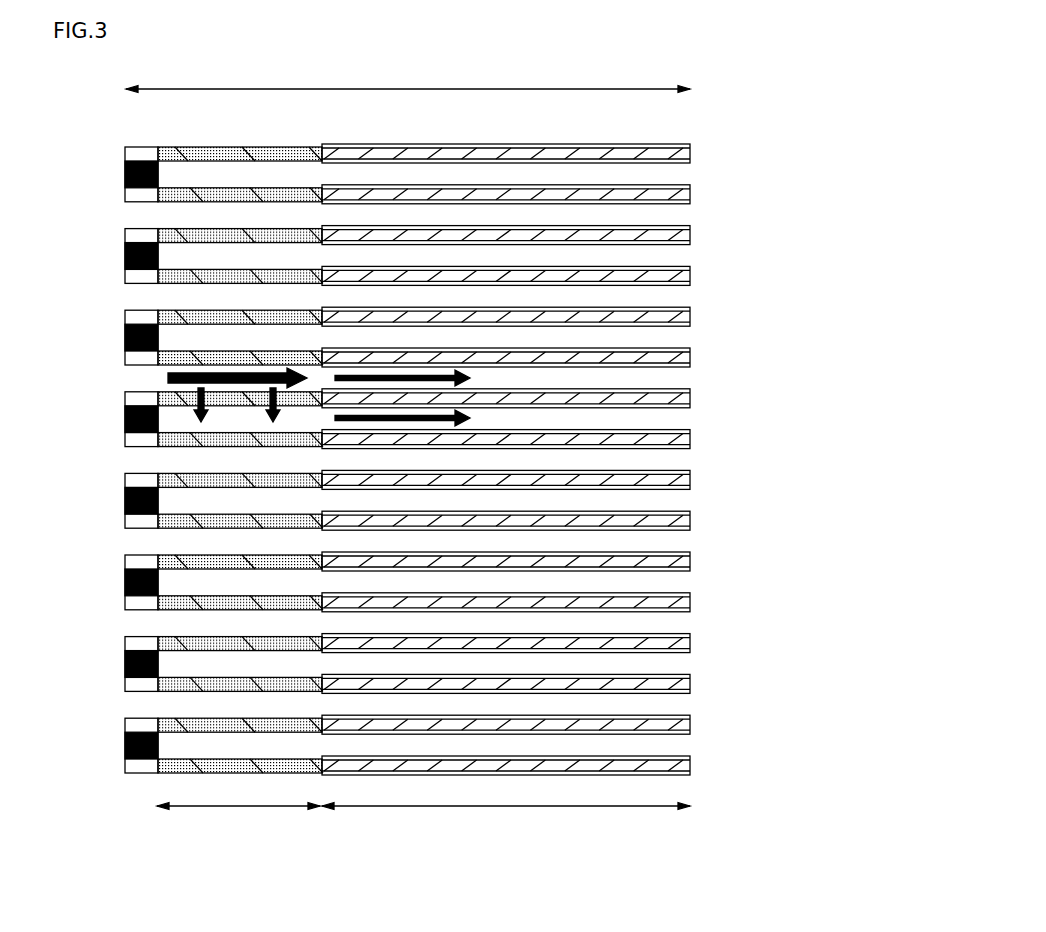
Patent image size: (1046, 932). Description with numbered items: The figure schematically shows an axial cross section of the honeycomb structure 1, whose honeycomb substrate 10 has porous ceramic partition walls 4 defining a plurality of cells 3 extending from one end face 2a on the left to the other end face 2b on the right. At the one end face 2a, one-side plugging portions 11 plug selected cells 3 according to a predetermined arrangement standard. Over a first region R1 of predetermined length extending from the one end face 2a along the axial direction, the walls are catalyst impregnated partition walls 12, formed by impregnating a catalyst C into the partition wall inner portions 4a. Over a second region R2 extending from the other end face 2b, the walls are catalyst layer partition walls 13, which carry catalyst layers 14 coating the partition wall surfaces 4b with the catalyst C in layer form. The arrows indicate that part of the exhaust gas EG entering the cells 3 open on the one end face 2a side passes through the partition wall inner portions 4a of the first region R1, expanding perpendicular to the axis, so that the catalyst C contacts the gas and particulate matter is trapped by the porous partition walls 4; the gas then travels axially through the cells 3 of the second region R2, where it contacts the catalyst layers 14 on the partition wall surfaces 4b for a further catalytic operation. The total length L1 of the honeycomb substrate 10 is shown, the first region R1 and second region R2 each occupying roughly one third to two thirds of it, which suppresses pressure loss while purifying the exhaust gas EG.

The honeycomb structure 1 is at (110, 116).
The one end face 2a is at (125, 691).
The other end face 2b is at (690, 677).
The cells 3 is at (117, 460).
The partition walls 4 is at (460, 438).
The partition wall inner portions 4a is at (278, 147).
The partition wall surfaces 4b is at (522, 152).
The honeycomb substrate 10 is at (410, 144).
The one-side plugging portions 11 is at (125, 756).
The catalyst impregnated partition walls 12 is at (240, 460).
The catalyst layer partition walls 13 is at (542, 456).
The catalyst layers 14 is at (314, 461).
The catalyst C is at (214, 147).
The exhaust gas EG is at (319, 401).
The total length L1 is at (447, 89).
The first region R1 is at (250, 808).
The second region R2 is at (500, 808).